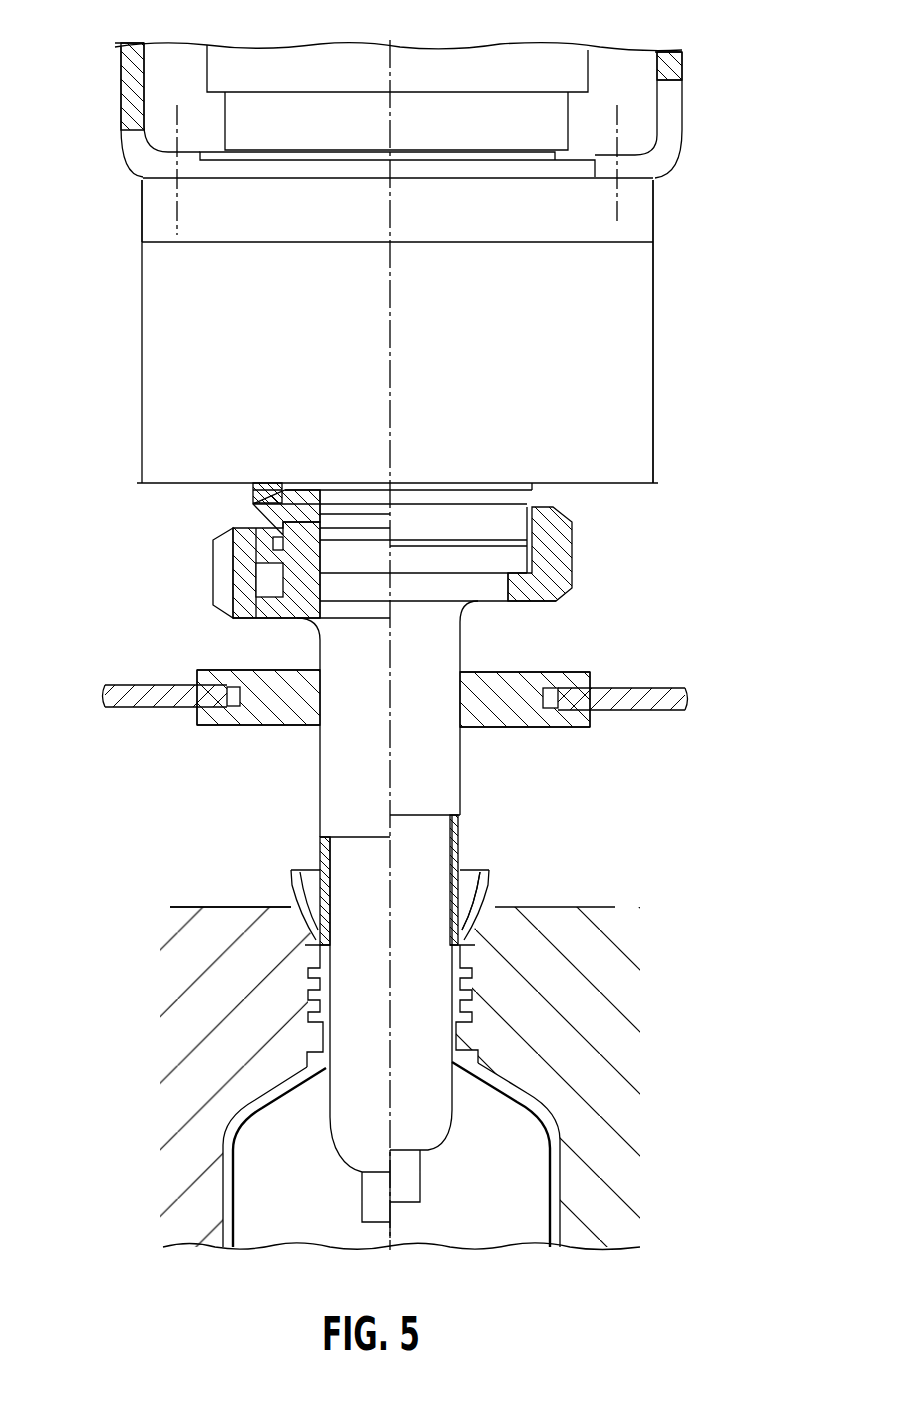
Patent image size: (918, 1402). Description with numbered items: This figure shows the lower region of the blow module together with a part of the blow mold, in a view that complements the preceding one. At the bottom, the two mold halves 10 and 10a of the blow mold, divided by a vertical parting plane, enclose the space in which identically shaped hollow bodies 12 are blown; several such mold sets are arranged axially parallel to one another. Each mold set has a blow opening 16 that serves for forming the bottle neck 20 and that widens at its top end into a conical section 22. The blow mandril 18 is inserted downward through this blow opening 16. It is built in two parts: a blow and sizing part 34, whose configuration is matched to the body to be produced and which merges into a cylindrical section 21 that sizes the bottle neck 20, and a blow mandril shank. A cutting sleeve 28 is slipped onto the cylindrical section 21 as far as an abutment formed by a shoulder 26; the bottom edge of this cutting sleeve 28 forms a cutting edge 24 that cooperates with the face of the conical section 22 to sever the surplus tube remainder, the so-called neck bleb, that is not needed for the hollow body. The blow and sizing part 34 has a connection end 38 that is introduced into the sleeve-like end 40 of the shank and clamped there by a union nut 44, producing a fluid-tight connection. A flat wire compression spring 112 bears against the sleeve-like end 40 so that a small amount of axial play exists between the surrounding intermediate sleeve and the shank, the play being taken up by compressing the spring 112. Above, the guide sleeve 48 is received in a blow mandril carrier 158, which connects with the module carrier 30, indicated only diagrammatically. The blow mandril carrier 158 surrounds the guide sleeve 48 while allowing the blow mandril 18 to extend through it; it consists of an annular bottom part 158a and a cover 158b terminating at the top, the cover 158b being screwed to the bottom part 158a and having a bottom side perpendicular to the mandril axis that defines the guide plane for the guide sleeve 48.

The mold half 10 is at (555, 918).
The mold half 10a is at (215, 927).
The hollow body 12 is at (505, 1137).
The blow opening 16 is at (433, 975).
The blow mandril 18 is at (413, 870).
The bottle neck 20 is at (470, 1015).
The cylindrical section 21 is at (345, 860).
The conical section 22 is at (470, 935).
The cutting edge 24 is at (318, 942).
The shoulder 26 is at (440, 815).
The cutting sleeve 28 is at (470, 893).
The module carrier 30 is at (132, 135).
The blow and sizing part 34 is at (447, 638).
The connection end 38 is at (270, 578).
The sleeve-like end 40 is at (263, 512).
The union nut 44 is at (560, 570).
The guide sleeve 48 is at (240, 65).
The compression spring 112 is at (255, 498).
The blow mandril carrier 158 is at (325, 330).
The bottom part 158a is at (633, 360).
The cover 158b is at (645, 213).